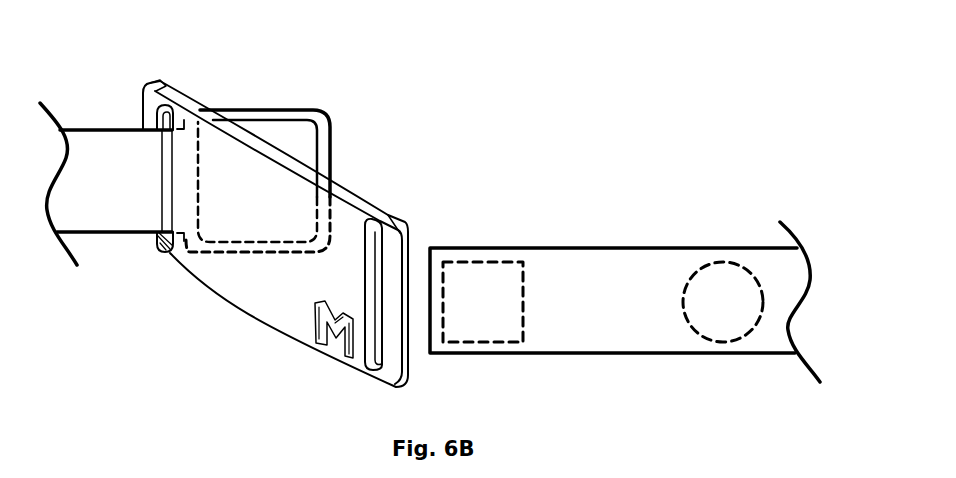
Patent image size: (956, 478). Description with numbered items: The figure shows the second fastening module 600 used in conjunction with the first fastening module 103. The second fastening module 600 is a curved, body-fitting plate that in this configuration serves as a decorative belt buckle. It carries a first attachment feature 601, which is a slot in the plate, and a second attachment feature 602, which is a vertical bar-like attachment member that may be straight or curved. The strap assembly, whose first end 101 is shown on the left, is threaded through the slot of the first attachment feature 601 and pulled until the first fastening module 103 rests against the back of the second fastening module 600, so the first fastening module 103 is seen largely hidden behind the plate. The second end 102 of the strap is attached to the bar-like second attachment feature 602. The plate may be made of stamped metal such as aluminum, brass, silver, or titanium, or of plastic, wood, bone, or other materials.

The first end 101 is at (79, 141).
The second end 102 is at (583, 255).
The first fastening module 103 is at (268, 113).
The second fastening module 600 is at (172, 97).
The first attachment feature 601 is at (157, 242).
The second attachment feature 602 is at (395, 328).